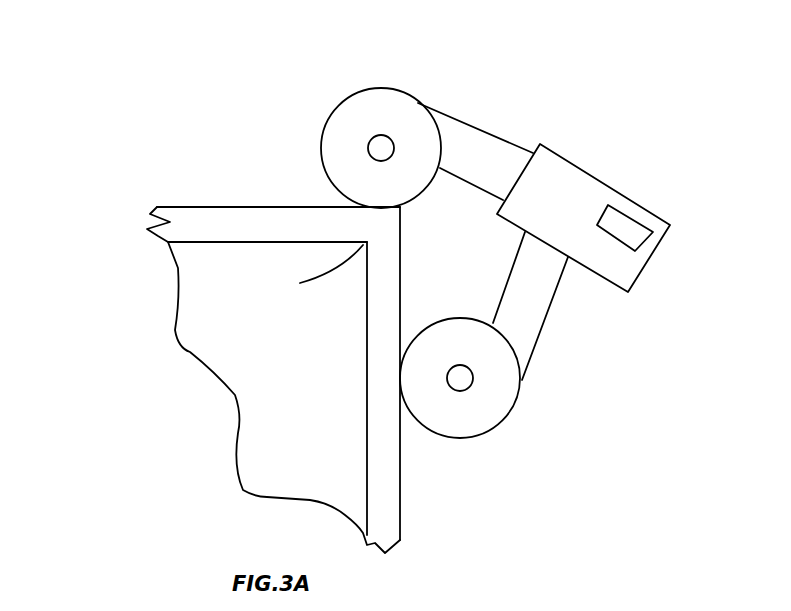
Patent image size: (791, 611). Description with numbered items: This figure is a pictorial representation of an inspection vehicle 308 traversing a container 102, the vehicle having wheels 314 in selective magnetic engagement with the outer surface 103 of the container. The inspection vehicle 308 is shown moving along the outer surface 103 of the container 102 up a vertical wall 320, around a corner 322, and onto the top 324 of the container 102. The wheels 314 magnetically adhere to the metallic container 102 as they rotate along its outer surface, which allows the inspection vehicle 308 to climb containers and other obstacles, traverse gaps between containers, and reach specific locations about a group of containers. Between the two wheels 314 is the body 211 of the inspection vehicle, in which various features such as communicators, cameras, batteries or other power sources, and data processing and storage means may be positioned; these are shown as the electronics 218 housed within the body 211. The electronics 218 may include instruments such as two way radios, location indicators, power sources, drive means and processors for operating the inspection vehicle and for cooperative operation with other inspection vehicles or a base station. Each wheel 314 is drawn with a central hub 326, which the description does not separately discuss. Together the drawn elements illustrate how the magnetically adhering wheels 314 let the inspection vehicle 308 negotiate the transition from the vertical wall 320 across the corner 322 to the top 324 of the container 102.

The container 102 is at (168, 222).
The outer surface 103 is at (213, 205).
The top 324 is at (172, 205).
The corner 322 is at (300, 283).
The vertical wall 320 is at (400, 465).
The wheels 314 is at (352, 123).
The roller hub 326 is at (383, 89).
The body 211 is at (595, 177).
The electronics 218 is at (627, 228).
The inspection vehicle 308 is at (580, 97).